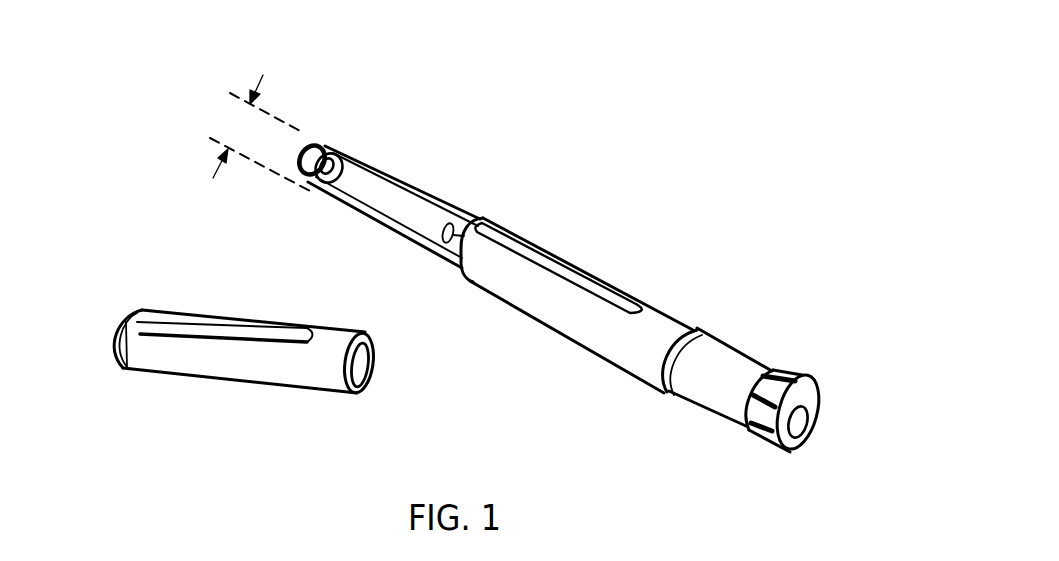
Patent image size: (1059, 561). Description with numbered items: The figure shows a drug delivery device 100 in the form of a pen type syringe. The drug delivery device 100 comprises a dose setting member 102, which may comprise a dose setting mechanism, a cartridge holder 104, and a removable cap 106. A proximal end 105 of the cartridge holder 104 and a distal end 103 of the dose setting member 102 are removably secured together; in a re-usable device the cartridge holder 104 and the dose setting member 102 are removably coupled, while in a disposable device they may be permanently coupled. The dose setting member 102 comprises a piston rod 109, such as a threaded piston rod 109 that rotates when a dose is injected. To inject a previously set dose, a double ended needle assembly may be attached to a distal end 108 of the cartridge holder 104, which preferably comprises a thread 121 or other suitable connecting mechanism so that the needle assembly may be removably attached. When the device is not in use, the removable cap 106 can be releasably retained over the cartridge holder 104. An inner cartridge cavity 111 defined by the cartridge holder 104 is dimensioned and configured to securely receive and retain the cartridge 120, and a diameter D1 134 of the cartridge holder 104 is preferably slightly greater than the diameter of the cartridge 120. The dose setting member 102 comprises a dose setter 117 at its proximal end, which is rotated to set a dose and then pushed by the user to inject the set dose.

The drug delivery device 100 is at (640, 72).
The dose setting member 102 is at (606, 228).
The distal end of the dose setting member 103 is at (435, 257).
The cartridge holder 104 is at (462, 108).
The proximal end of the cartridge holder 105 is at (464, 242).
The removable cap 106 is at (165, 293).
The distal end of the cartridge holder 108 is at (302, 142).
The piston rod 109 is at (446, 224).
The inner cartridge cavity 111 is at (372, 216).
The dose setter 117 is at (765, 343).
The cartridge 120 is at (400, 200).
The thread 121 is at (311, 137).
The diameter D1 134 is at (220, 108).